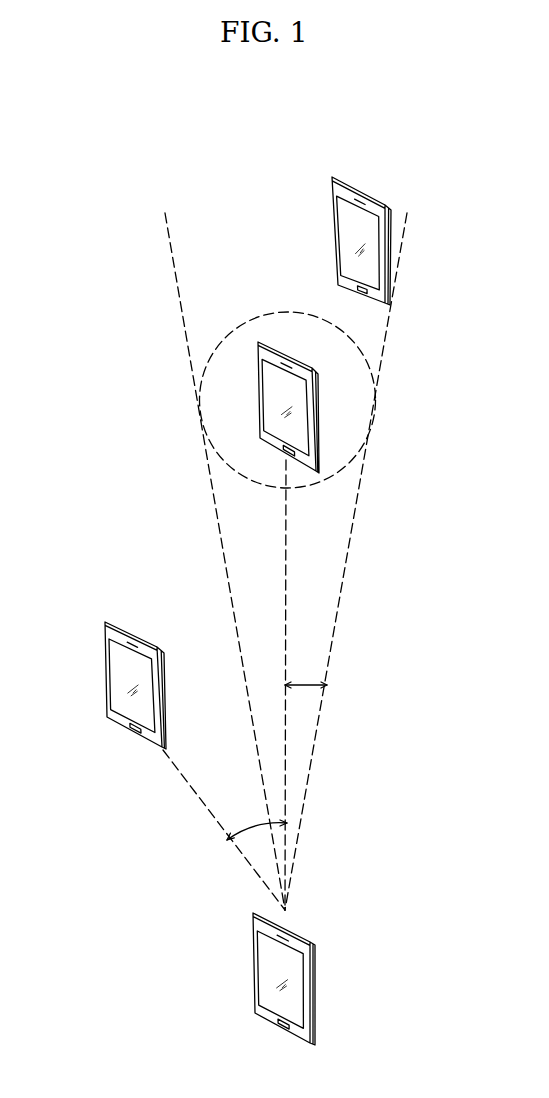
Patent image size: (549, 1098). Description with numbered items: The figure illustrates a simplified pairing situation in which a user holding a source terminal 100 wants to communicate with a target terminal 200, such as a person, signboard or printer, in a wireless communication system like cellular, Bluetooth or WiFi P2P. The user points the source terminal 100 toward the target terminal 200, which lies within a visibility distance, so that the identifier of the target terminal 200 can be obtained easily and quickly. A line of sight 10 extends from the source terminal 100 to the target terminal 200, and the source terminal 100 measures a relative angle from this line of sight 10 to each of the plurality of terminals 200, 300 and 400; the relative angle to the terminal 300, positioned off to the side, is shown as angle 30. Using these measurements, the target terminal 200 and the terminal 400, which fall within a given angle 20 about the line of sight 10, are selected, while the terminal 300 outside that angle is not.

The line of sight 10 is at (285, 570).
The given angle 20 is at (306, 670).
The relative angle 30 is at (225, 830).
The source terminal 100 is at (313, 988).
The target terminal 200 is at (282, 352).
The terminal 300 is at (120, 675).
The terminal 400 is at (373, 193).